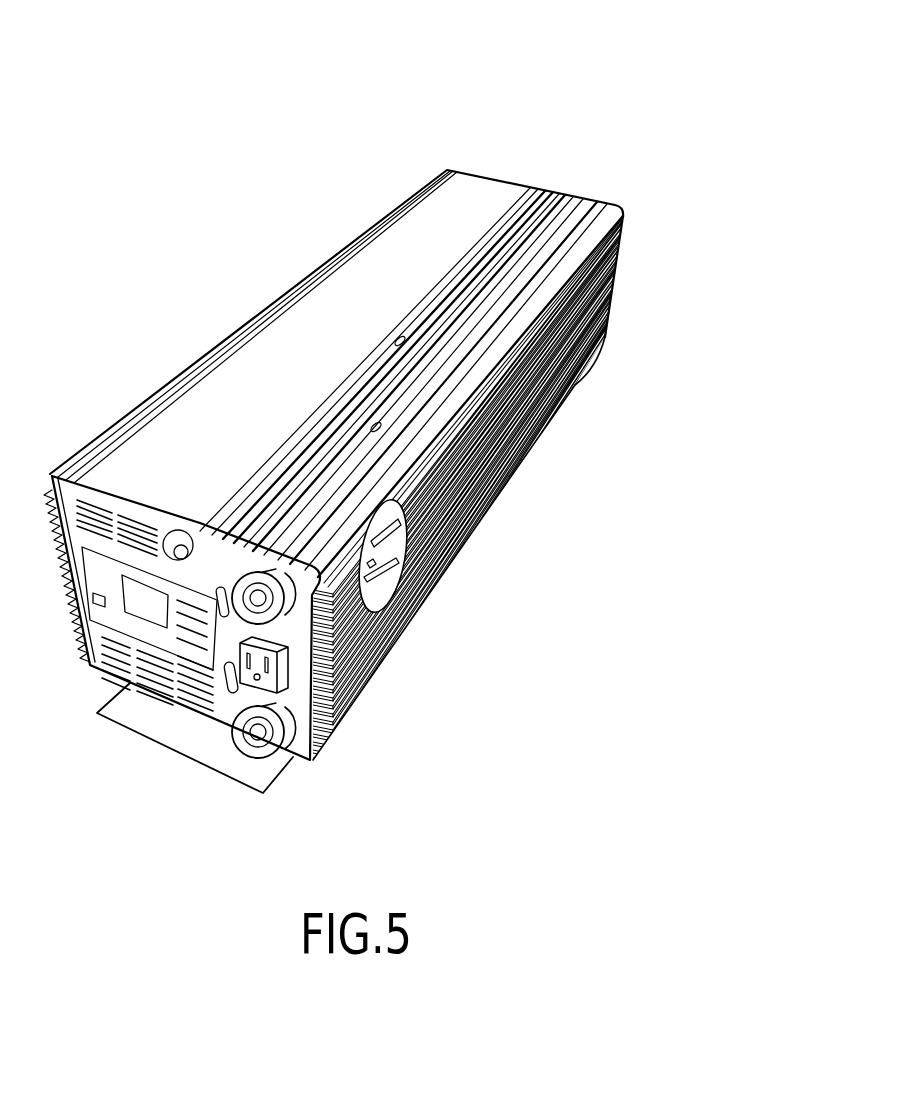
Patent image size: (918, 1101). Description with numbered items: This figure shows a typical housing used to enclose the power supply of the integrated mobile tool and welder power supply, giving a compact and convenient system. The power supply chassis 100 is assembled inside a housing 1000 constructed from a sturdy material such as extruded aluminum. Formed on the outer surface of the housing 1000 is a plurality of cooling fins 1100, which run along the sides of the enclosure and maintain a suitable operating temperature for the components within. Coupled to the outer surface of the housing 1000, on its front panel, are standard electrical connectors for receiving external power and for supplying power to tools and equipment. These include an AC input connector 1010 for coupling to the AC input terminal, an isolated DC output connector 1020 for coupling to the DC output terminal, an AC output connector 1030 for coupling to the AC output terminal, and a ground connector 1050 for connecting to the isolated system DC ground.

The power supply chassis 100 is at (483, 114).
The housing 1000 is at (365, 268).
The cooling fins 1100 is at (581, 300).
The AC input connector 1010 is at (387, 555).
The isolated DC output connector 1020 is at (292, 607).
The AC output connector 1030 is at (284, 668).
The ground connector 1050 is at (289, 737).